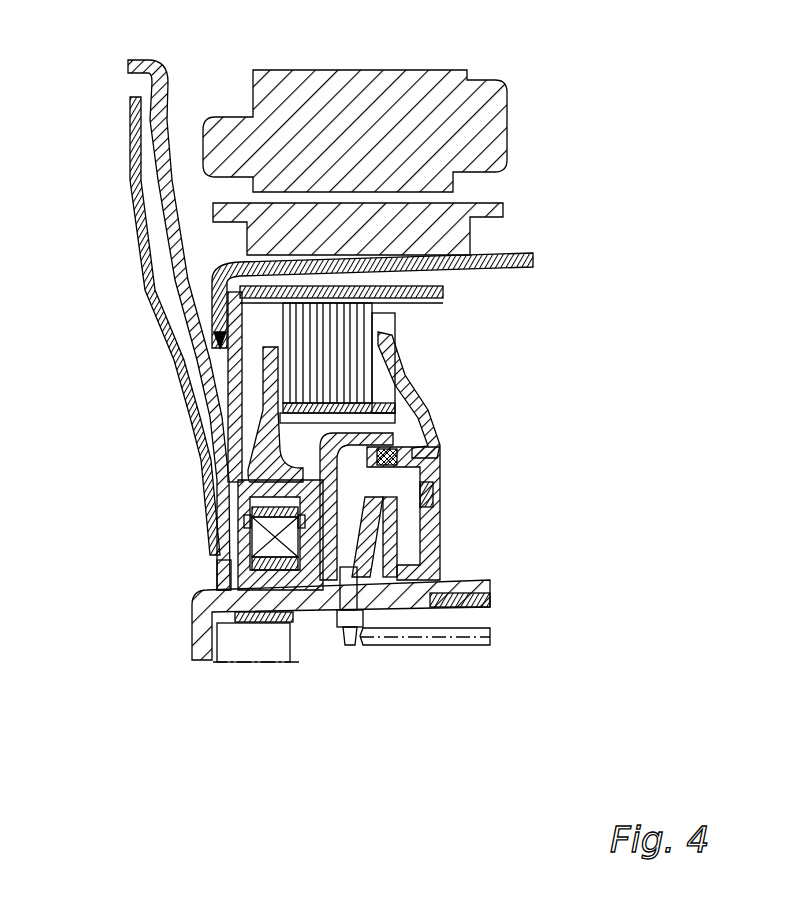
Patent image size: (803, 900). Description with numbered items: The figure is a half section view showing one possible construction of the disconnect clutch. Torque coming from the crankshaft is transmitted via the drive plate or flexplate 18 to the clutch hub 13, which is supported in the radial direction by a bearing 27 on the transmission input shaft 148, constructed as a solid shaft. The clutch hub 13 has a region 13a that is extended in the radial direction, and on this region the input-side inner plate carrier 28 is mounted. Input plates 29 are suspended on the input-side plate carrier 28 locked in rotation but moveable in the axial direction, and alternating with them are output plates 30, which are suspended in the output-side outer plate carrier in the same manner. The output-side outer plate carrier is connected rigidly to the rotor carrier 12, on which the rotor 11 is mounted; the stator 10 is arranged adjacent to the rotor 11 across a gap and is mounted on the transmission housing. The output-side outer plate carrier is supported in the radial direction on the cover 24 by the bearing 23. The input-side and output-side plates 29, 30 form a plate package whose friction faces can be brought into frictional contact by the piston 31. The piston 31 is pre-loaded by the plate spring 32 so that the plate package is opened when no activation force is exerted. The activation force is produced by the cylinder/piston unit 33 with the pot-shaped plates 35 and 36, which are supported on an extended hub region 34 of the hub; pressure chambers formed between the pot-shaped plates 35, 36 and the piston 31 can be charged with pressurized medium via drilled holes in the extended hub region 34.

The stator 10 is at (487, 107).
The rotor 11 is at (500, 200).
The rotor carrier 12 is at (527, 253).
The clutch hub 13 is at (213, 283).
The radially extended region 13a is at (205, 455).
The flexplate 18 is at (133, 173).
The bearing 23 is at (213, 563).
The cover 24 is at (163, 72).
The bearing 27 is at (300, 605).
The input-side inner plate carrier 28 is at (263, 400).
The input plates 29 is at (220, 350).
The output plates 30 is at (228, 322).
The piston 31 is at (430, 407).
The plate spring 32 is at (445, 545).
The cylinder/piston unit 33 is at (458, 499).
The extended hub region 34 is at (487, 565).
The pot-shaped plate 35 is at (433, 460).
The pot-shaped plate 36 is at (350, 645).
The transmission input shaft 148 is at (487, 617).